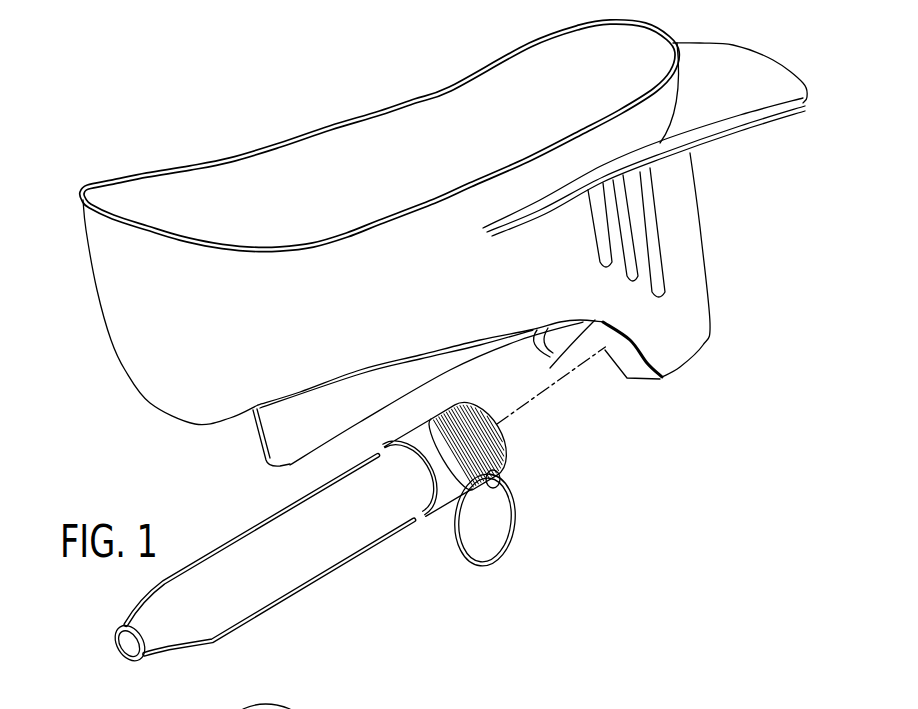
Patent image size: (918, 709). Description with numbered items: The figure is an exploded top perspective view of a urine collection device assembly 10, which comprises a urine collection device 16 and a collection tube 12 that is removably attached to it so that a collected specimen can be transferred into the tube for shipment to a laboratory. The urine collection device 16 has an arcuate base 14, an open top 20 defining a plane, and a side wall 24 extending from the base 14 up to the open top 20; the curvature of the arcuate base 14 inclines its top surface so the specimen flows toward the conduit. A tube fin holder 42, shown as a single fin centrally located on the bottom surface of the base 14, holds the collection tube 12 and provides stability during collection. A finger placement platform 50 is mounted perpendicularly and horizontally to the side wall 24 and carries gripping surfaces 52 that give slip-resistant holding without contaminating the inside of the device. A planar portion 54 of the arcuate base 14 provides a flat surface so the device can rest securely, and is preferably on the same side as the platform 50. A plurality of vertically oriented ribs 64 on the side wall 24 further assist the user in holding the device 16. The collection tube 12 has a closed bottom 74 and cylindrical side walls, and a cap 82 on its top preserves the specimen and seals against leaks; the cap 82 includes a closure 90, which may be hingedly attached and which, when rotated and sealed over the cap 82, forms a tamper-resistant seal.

The urine collection device assembly 10 is at (820, 536).
The collection tube 12 is at (375, 515).
The arcuate base 14 is at (579, 338).
The urine collection device 16 is at (86, 337).
The open top 20 is at (360, 365).
The side wall 24 is at (124, 272).
The tube fin holder 42 is at (282, 447).
The finger placement platform 50 is at (645, 203).
The gripping surfaces 52 is at (703, 73).
The planar portion 54 is at (688, 362).
The ribs 64 is at (634, 257).
The closed bottom 74 is at (133, 663).
The cap 82 is at (443, 478).
The closure 90 is at (490, 537).